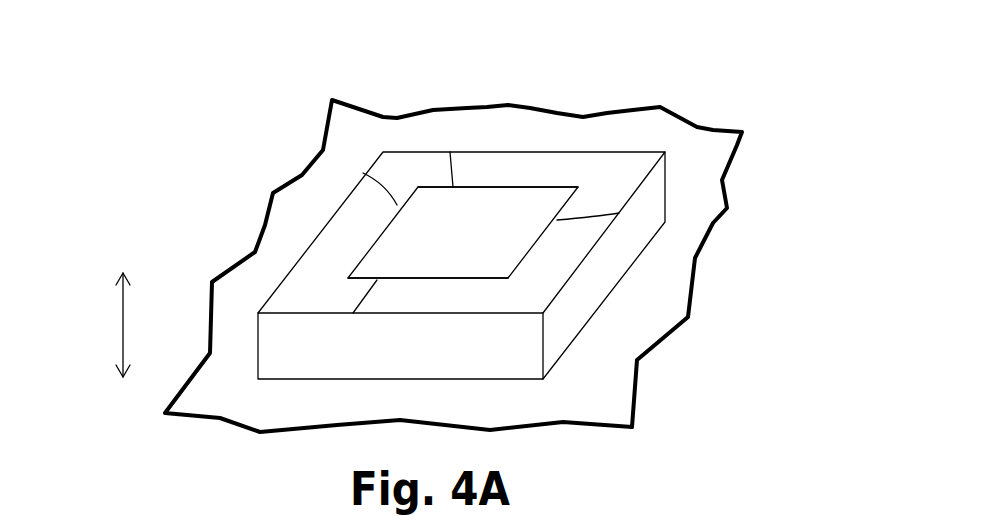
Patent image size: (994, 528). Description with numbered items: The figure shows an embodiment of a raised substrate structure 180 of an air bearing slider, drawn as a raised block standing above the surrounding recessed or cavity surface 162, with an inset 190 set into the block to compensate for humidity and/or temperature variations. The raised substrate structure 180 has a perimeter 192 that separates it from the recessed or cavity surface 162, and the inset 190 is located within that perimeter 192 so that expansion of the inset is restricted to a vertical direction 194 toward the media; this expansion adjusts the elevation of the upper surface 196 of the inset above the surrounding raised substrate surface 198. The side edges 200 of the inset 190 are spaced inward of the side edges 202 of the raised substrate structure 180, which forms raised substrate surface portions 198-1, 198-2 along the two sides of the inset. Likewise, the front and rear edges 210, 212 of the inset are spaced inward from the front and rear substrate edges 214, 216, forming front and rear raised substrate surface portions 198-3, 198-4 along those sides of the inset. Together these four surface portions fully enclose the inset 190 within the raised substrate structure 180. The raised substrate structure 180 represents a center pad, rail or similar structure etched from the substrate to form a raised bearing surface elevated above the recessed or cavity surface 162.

The recessed or cavity surface 162 is at (623, 320).
The raised substrate structure 180 is at (669, 171).
The inset 190 is at (525, 214).
The perimeter 192 is at (360, 170).
The vertical direction 194 is at (121, 317).
The upper surface 196 is at (440, 240).
The raised substrate surface 198 is at (307, 298).
The raised substrate surface portion 198-1 is at (367, 230).
The raised substrate surface portion 198-2 is at (540, 260).
The front raised substrate surface portion 198-3 is at (475, 177).
The rear raised substrate surface portion 198-4 is at (397, 307).
The side edges of the inset 200 is at (363, 173).
The side edges of the raised substrate structure 202 is at (307, 252).
The front edge of the inset 210 is at (450, 152).
The rear edge of the inset 212 is at (353, 313).
The front substrate edge 214 is at (495, 152).
The rear substrate edge 216 is at (330, 313).